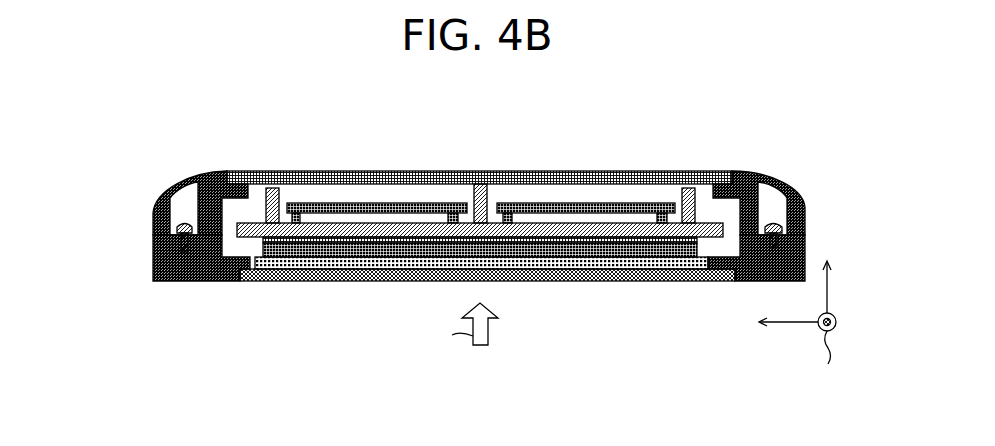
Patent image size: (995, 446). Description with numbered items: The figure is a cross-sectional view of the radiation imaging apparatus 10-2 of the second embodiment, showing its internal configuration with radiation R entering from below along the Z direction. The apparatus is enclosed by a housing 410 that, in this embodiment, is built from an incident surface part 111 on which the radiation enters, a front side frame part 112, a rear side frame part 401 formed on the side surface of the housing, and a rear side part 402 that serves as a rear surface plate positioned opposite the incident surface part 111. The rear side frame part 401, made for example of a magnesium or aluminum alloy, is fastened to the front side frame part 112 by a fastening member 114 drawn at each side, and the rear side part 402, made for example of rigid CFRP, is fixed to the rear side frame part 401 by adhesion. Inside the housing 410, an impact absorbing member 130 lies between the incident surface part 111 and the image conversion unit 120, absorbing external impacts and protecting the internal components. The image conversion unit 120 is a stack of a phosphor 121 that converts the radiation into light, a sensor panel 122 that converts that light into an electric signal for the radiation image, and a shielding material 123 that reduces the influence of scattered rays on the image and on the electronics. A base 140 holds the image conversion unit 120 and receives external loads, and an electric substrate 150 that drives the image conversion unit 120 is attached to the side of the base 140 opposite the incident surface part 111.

The radiation imaging apparatus 10-2 is at (300, 140).
The housing 410 is at (105, 125).
The rear side part 402 is at (237, 172).
The rear side frame part 401 is at (207, 186).
The fastening member 114 is at (185, 224).
The front side frame part 112 is at (173, 250).
The incident surface part 111 is at (240, 270).
The base 140 is at (482, 184).
The electric substrate 150 is at (393, 203).
The image conversion unit 120 is at (765, 117).
The shielding material 123 is at (583, 237).
The sensor panel 122 is at (623, 243).
The phosphor 121 is at (657, 252).
The impact absorbing member 130 is at (663, 258).